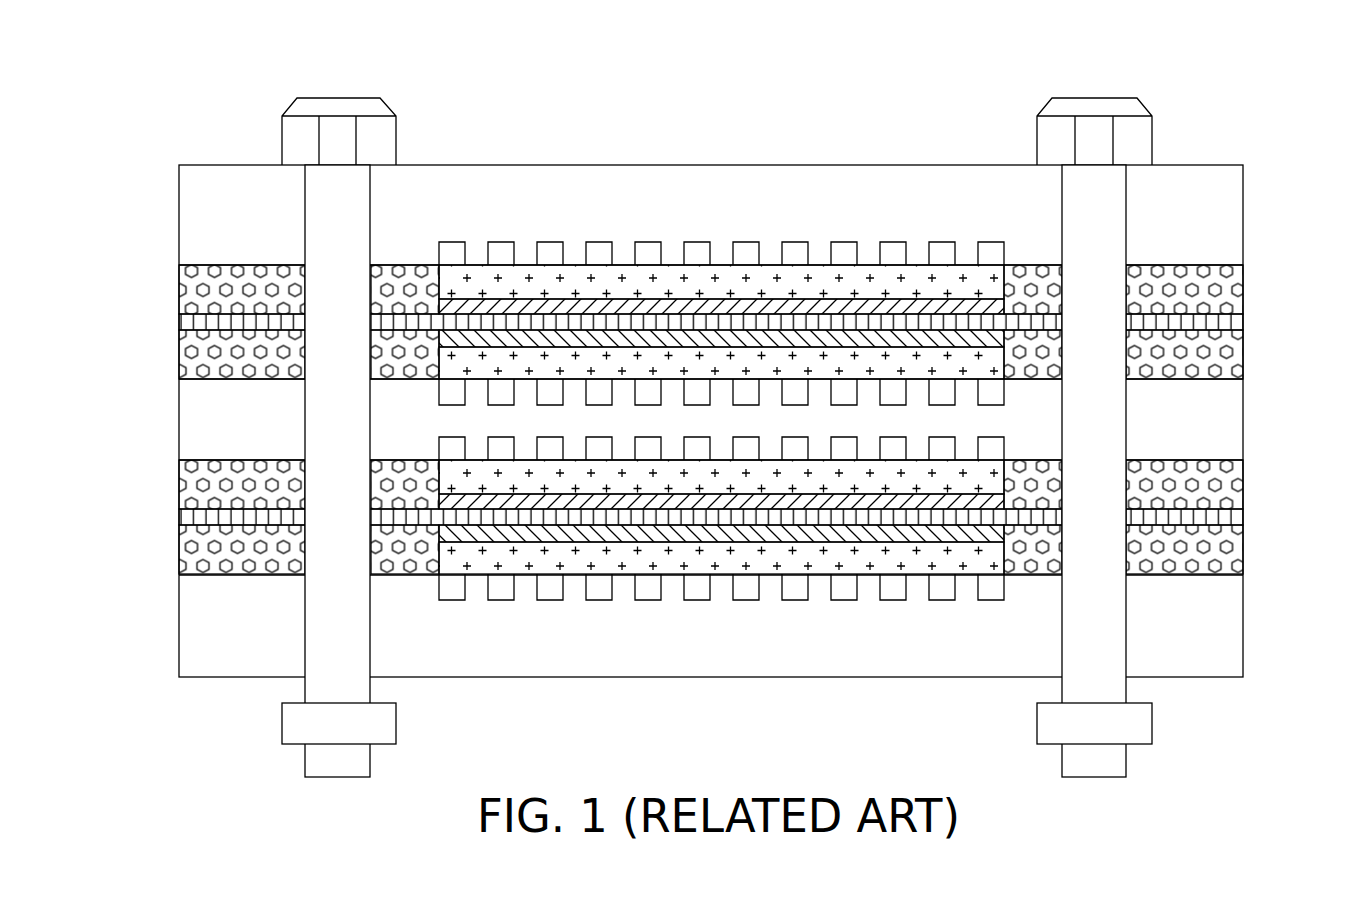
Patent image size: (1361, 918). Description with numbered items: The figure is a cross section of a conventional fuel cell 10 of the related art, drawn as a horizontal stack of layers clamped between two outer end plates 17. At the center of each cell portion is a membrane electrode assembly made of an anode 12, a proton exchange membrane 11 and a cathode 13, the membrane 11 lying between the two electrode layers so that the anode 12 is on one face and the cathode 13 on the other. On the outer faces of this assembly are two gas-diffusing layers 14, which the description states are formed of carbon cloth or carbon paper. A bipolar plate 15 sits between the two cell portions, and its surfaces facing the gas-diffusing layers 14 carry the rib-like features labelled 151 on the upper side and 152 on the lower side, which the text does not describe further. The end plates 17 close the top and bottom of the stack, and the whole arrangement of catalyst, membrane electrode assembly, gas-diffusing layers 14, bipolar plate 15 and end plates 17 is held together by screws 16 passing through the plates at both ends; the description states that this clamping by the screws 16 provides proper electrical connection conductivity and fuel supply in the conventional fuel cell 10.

The conventional fuel cell 10 is at (195, 91).
The proton exchange membrane 11 is at (1237, 320).
The anode 12 is at (575, 300).
The cathode 13 is at (573, 542).
The gas-diffusing layer 14 is at (672, 280).
The bipolar plate 15 is at (1237, 420).
The flow channel ribs of bipolar plate (upper) 151 is at (793, 253).
The flow channel ribs of bipolar plate (lower) 152 is at (794, 588).
The screw 16 is at (1093, 125).
The end plate 17 is at (738, 185).